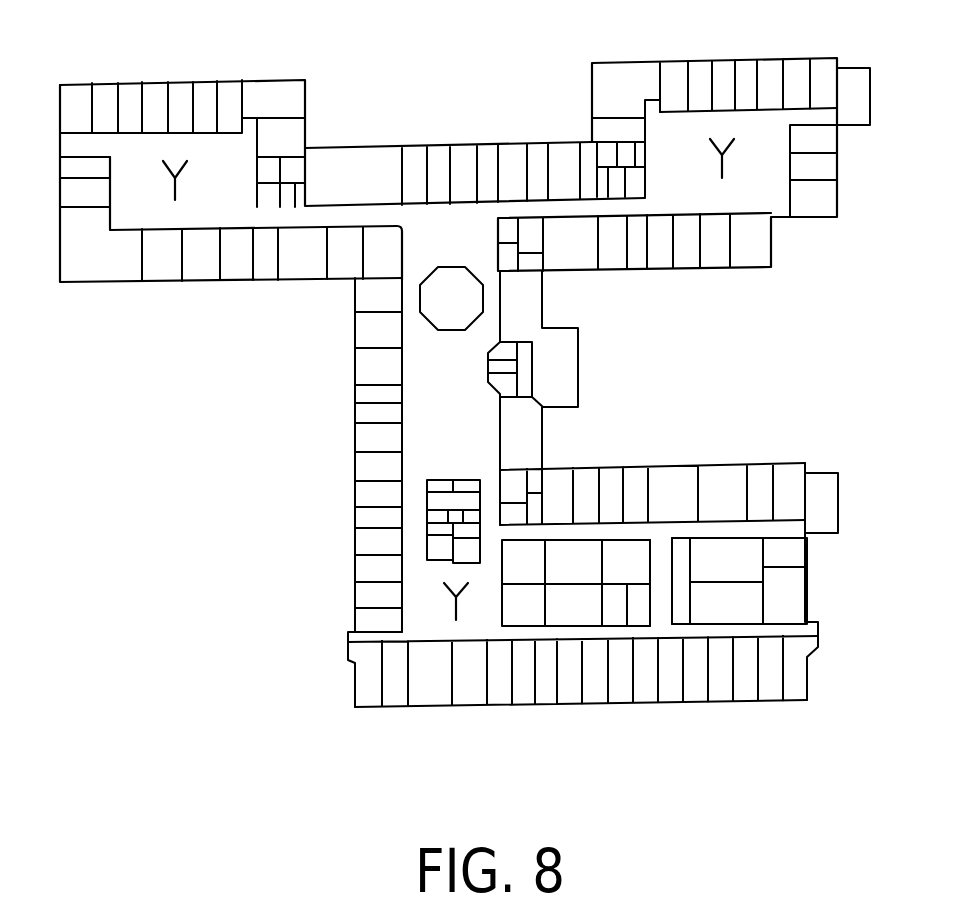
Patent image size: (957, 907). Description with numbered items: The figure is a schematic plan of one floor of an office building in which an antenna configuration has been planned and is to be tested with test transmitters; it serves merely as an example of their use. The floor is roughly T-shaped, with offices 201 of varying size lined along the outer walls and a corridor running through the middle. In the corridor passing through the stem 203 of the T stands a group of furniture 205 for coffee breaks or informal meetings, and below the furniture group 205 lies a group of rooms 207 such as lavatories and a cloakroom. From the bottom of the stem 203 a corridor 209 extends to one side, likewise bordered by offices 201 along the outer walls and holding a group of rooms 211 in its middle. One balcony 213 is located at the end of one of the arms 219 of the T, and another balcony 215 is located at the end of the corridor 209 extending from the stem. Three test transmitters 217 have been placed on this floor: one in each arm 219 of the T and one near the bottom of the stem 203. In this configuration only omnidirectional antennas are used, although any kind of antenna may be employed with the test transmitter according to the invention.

The offices 201 is at (180, 92).
The stem 203 is at (427, 382).
The furniture group 205 is at (427, 298).
The group of rooms 207 is at (440, 478).
The corridor 209 is at (662, 608).
The group of rooms 211 is at (568, 612).
The balcony 213 is at (862, 78).
The balcony 215 is at (827, 485).
The test transmitter 217 is at (440, 588).
The arm 219 is at (123, 217).